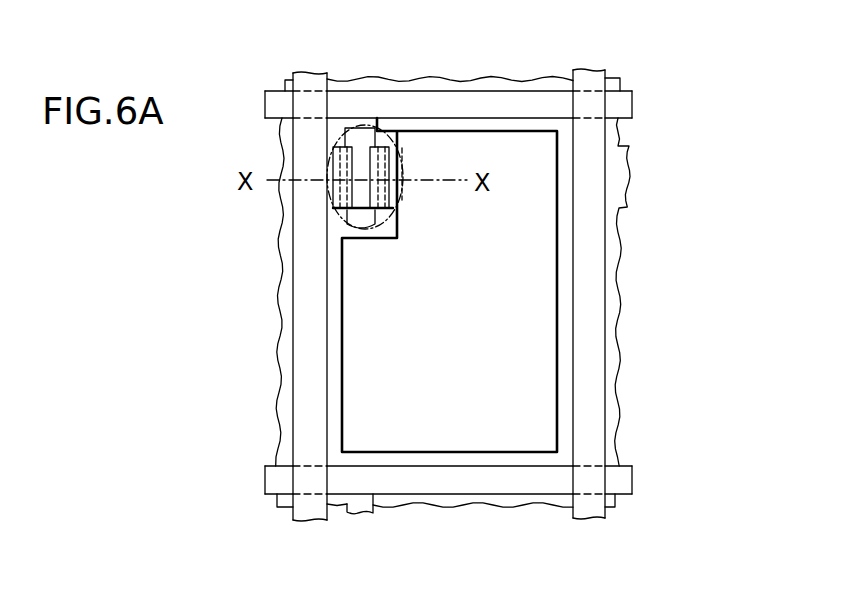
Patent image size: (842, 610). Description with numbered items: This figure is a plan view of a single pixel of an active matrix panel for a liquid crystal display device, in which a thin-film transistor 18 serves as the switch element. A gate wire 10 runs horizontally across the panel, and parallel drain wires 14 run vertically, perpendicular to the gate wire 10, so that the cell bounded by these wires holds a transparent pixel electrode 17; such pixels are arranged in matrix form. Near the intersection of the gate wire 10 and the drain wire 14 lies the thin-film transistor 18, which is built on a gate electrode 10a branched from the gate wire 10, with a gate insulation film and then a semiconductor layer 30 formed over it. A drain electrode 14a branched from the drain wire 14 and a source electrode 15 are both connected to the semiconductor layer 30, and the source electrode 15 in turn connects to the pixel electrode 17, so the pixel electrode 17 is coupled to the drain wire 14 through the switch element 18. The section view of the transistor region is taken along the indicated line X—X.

The gate wire 10 is at (530, 97).
The gate electrode 10a is at (360, 507).
The drain wire 14 is at (300, 392).
The drain electrode 14a is at (330, 200).
The source electrode 15 is at (400, 157).
The pixel electrode 17 is at (465, 443).
The thin-film transistor 18 is at (330, 162).
The semiconductor layer 30 is at (357, 137).